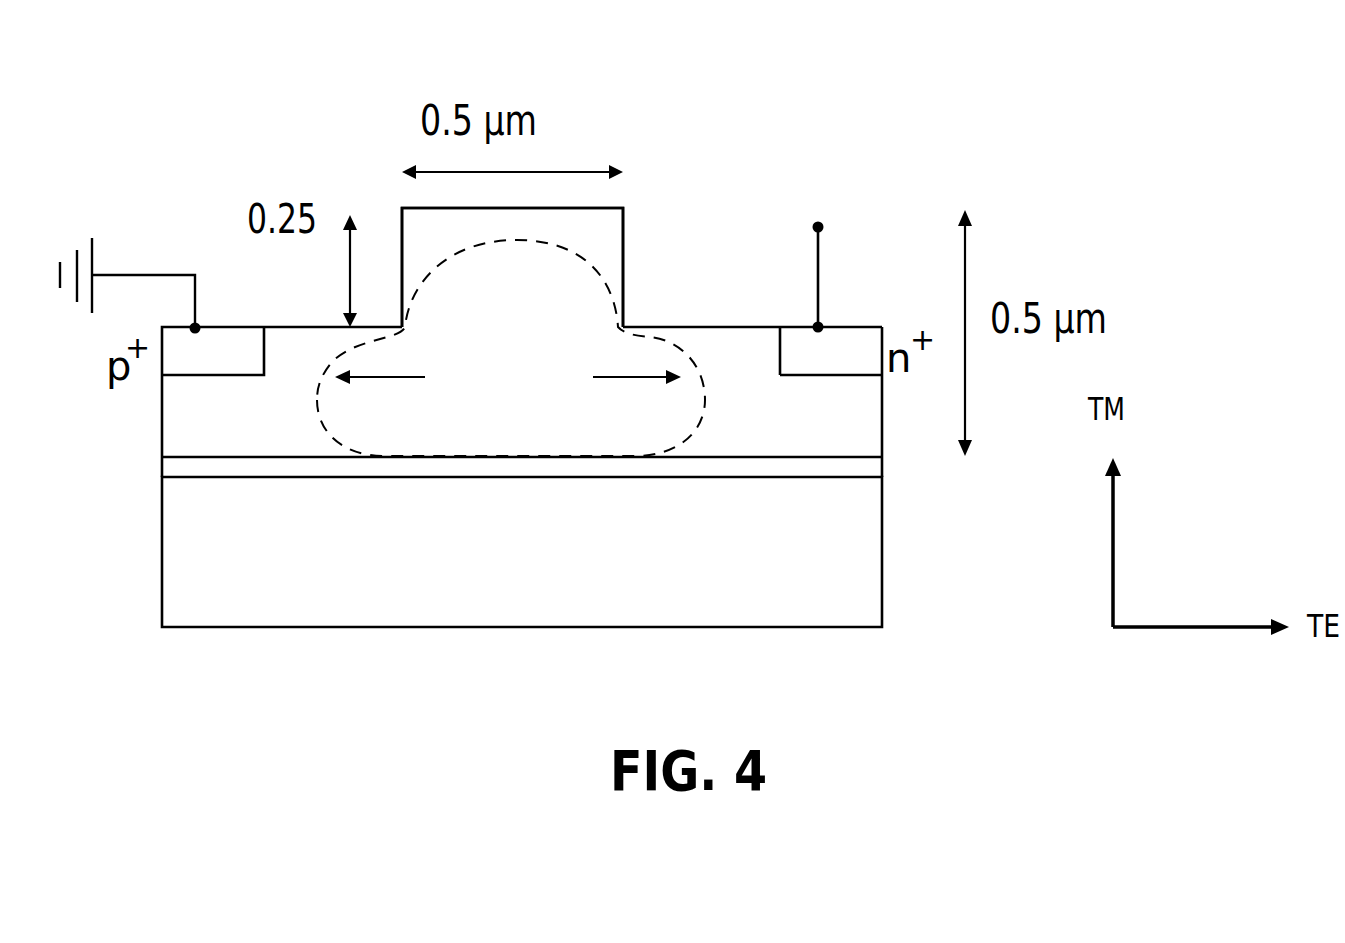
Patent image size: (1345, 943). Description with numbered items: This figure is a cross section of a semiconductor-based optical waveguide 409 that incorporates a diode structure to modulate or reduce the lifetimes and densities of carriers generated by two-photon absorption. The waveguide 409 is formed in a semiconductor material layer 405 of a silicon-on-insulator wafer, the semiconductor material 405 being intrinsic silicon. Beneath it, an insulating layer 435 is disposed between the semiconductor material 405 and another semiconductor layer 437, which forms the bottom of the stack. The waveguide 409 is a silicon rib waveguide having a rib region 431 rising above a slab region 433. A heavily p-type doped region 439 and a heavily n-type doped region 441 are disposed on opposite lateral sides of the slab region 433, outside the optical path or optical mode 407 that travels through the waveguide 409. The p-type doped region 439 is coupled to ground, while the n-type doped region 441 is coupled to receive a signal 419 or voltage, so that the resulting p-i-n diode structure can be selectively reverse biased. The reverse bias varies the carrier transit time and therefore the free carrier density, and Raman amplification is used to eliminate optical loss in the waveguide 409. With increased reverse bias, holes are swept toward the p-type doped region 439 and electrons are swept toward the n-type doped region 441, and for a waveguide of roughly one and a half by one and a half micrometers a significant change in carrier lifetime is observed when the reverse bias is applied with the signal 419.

The semiconductor material layer 405 is at (475, 437).
The optical mode 407 is at (682, 327).
The optical waveguide 409 is at (656, 188).
The signal 419 is at (848, 126).
The rib region 431 is at (606, 241).
The slab region 433 is at (828, 436).
The insulating layer 435 is at (875, 467).
The semiconductor layer 437 is at (875, 545).
The p+ doped region 439 is at (162, 364).
The n+ doped region 441 is at (847, 327).